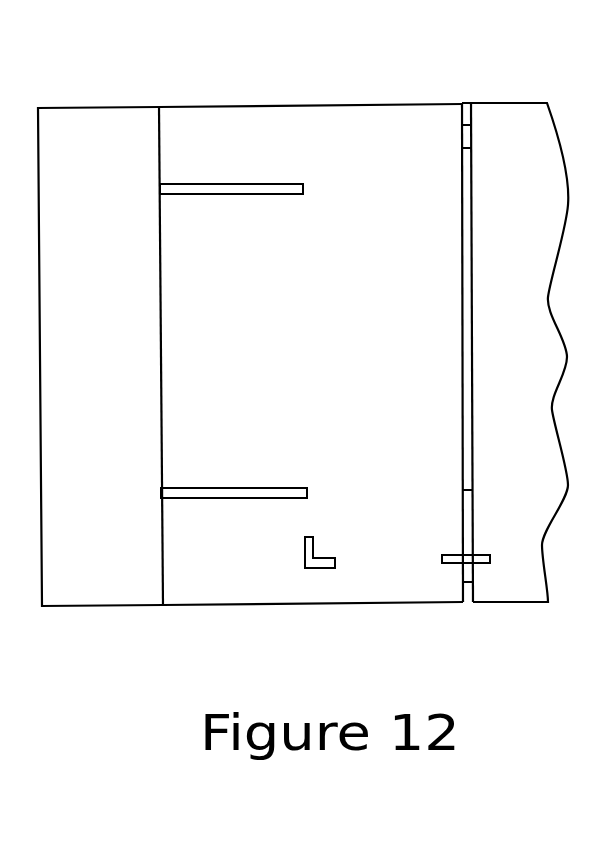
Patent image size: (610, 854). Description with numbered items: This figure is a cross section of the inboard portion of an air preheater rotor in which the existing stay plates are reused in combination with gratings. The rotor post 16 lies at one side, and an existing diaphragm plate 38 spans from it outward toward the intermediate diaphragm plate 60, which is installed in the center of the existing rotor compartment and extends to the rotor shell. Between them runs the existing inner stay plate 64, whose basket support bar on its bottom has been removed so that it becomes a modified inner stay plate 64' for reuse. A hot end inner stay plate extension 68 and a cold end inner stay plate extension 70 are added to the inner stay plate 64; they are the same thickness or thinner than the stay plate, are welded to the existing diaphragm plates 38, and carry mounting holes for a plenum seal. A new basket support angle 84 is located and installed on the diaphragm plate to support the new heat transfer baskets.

The rotor post 16 is at (115, 306).
The existing diaphragm plate 38 is at (326, 304).
The intermediate diaphragm plate 60 is at (531, 302).
The existing inner stay plate 64 is at (507, 352).
The modified inner stay plate 64' is at (376, 394).
The hot end inner stay plate extension 68 is at (466, 135).
The cold end inner stay plate extension 70 is at (472, 523).
The basket support angle 84 is at (303, 555).